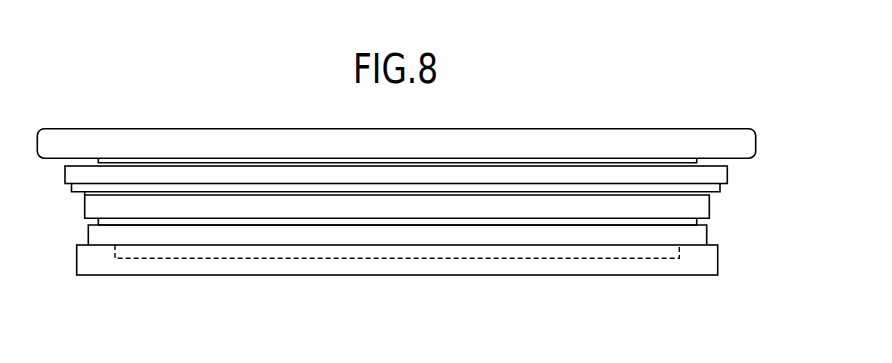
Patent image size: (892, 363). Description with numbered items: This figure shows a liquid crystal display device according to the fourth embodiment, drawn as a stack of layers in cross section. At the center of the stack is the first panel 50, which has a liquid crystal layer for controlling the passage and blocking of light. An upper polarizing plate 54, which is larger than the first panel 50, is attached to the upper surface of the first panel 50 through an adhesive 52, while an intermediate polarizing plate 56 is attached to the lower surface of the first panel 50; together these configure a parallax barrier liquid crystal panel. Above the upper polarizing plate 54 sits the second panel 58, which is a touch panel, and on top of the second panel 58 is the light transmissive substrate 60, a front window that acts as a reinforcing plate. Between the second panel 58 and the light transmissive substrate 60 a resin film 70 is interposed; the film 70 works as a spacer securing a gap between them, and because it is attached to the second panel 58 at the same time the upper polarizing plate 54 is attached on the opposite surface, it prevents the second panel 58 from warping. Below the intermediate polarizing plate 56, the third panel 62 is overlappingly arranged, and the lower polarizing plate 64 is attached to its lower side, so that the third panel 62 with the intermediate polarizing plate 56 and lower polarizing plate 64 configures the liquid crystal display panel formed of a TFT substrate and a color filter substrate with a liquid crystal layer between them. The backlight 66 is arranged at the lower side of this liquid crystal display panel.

The light transmissive substrate 60 is at (756, 146).
The film 70 is at (644, 162).
The second panel 58 is at (727, 175).
The upper polarizing plate 54 is at (720, 188).
The adhesive 52 is at (709, 196).
The first panel 50 is at (709, 208).
The intermediate polarizing plate 56 is at (707, 227).
The third panel 62 is at (707, 237).
The lower polarizing plate 64 is at (602, 259).
The backlight 66 is at (698, 275).